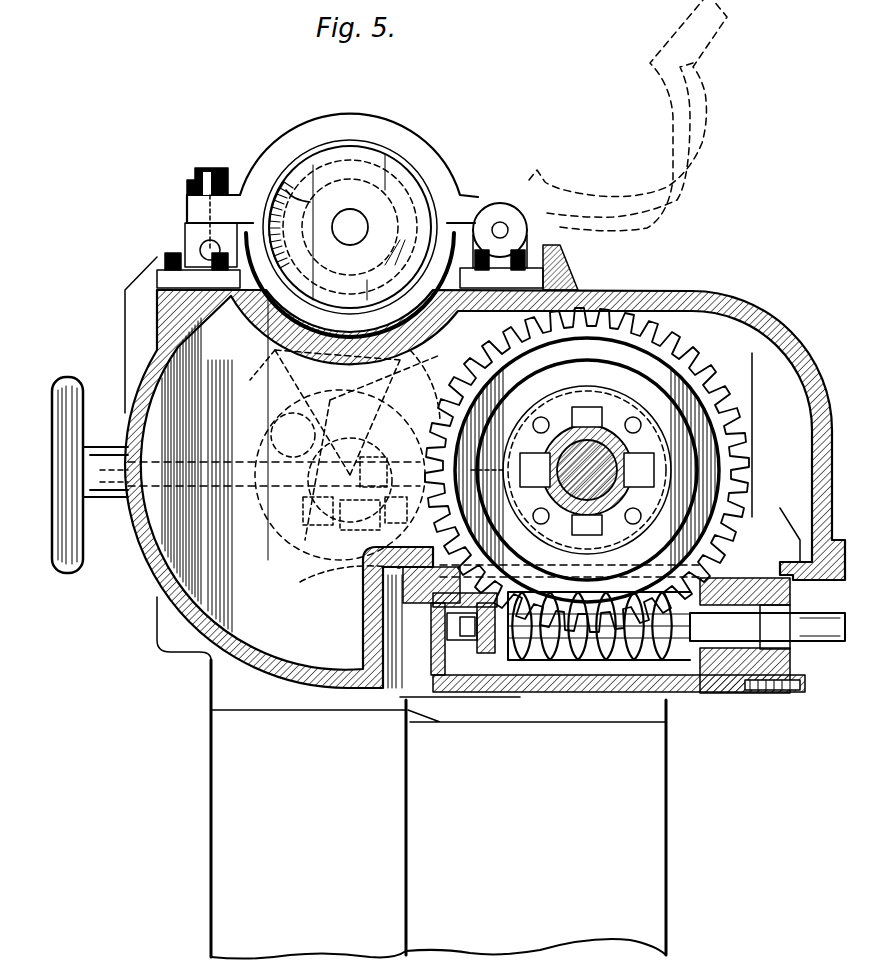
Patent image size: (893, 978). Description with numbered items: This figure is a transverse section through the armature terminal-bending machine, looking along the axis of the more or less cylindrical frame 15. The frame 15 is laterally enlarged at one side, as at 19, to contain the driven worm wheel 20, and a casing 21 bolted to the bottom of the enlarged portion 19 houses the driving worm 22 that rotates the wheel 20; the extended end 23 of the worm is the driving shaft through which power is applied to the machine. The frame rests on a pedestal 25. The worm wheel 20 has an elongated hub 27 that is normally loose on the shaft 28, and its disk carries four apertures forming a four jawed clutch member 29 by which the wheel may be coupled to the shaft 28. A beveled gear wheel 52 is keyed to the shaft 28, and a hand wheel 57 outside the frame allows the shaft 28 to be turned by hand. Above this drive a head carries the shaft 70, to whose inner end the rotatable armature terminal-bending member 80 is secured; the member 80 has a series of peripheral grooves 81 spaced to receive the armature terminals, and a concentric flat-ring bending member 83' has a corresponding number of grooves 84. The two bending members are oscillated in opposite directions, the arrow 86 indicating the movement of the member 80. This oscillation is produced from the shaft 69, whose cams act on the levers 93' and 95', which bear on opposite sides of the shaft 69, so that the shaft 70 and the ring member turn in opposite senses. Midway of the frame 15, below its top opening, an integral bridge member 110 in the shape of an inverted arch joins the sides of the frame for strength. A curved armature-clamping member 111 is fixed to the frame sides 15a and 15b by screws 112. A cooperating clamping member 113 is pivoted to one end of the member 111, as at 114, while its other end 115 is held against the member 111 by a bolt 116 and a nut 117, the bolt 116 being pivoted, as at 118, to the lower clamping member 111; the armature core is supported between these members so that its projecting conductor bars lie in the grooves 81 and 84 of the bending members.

The frame 15 is at (152, 569).
The side of the frame 15a is at (165, 310).
The side of the frame 15b is at (562, 286).
The laterally enlarged portion 19 is at (742, 322).
The driven worm wheel 20 is at (660, 307).
The casing 21 is at (738, 694).
The driving worm 22 is at (612, 660).
The driving shaft 23 is at (767, 627).
The pedestal 25 is at (230, 795).
The elongated hub 27 is at (640, 445).
The shaft 28 is at (615, 472).
The four jawed clutch member 29 is at (587, 412).
The beveled gear wheel 52 is at (735, 400).
The hand wheel 57 is at (68, 378).
The shaft 69 is at (355, 520).
The shaft 70 is at (353, 224).
The armature terminal-bending member 80 is at (355, 182).
The grooves 81 is at (285, 190).
The bending plate 83' is at (350, 216).
The grooves 84 is at (311, 192).
The arrow 86 is at (505, 474).
The lever 93' is at (376, 472).
The lever 95' is at (284, 455).
The bridge member 110 is at (275, 351).
The curved armature-clamping member 111 is at (175, 270).
The screws 112 is at (182, 262).
The cooperating clamping member 113 is at (430, 190).
The pivot 114 is at (500, 222).
The end of clamping member 115 is at (232, 205).
The bolt 116 is at (200, 182).
The nut 117 is at (213, 178).
The pivot 118 is at (195, 233).